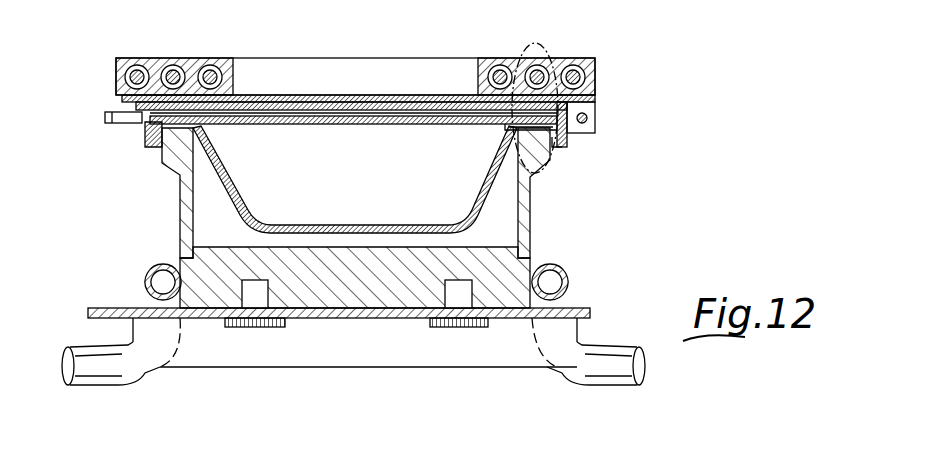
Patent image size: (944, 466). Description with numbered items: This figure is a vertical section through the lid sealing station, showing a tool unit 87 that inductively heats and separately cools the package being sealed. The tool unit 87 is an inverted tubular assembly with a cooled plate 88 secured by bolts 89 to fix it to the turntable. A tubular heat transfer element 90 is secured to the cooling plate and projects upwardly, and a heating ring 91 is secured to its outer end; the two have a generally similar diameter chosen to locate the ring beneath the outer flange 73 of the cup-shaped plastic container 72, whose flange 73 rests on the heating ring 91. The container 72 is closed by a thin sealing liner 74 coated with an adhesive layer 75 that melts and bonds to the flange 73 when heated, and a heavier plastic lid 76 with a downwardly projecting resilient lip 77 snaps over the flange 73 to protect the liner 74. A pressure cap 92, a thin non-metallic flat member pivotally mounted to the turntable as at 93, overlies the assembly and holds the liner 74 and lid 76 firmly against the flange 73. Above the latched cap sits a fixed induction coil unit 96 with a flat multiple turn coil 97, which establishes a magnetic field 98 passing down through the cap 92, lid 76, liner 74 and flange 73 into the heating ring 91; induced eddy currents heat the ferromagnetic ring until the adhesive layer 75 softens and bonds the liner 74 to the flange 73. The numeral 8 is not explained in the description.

The clamp strip 8 is at (515, 120).
The cup-shaped plastic container 72 is at (230, 193).
The outer flange 73 is at (166, 158).
The sealing liner 74 is at (345, 112).
The adhesive layer 75 is at (401, 126).
The plastic lid 76 is at (140, 131).
The resilient lip 77 is at (148, 138).
The tool unit 87 is at (158, 234).
The cooled plate 88 is at (318, 302).
The bolts 89 is at (462, 323).
The tubular heat transfer element 90 is at (531, 236).
The heating ring 91 is at (556, 150).
The pressure cap 92 is at (361, 92).
The pivotal mounting 93 is at (592, 121).
The induction coil unit 96 is at (499, 57).
The flat multiple turn coil 97 is at (578, 58).
The magnetic field 98 is at (546, 42).